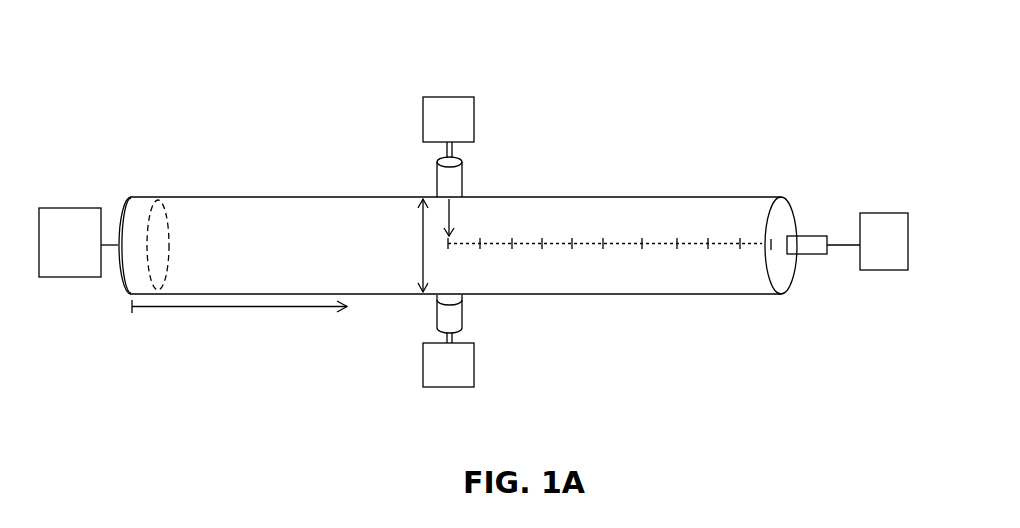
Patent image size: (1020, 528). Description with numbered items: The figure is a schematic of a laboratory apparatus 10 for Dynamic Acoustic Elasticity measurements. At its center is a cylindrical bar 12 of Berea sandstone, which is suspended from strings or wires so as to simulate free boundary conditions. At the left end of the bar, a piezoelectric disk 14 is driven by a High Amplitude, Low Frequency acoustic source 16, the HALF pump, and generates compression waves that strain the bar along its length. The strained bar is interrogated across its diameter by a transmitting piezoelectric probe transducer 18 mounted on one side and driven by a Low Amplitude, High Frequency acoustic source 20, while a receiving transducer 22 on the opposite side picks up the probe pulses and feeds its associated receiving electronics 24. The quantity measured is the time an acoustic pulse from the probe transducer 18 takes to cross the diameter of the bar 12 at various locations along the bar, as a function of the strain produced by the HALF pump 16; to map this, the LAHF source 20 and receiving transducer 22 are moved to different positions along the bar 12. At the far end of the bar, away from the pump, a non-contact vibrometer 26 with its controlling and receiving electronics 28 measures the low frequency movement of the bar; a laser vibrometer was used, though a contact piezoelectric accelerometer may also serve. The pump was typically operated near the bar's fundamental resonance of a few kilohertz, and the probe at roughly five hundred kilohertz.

The laboratory apparatus 10 is at (262, 115).
The cylindrical bar 12 is at (203, 197).
The piezoelectric disk 14 is at (131, 246).
The High Amplitude, Low Frequency (HALF) acoustic source 16 is at (52, 295).
The transmitting piezoelectric probe transducer 18 is at (467, 173).
The Low Amplitude, High Frequency (LAHF) acoustic source 20 is at (435, 131).
The receiving transducer 22 is at (462, 313).
The receiving electronics 24 is at (435, 377).
The non-contact vibrometer 26 is at (806, 232).
The controlling and receiving electronics 28 is at (870, 250).